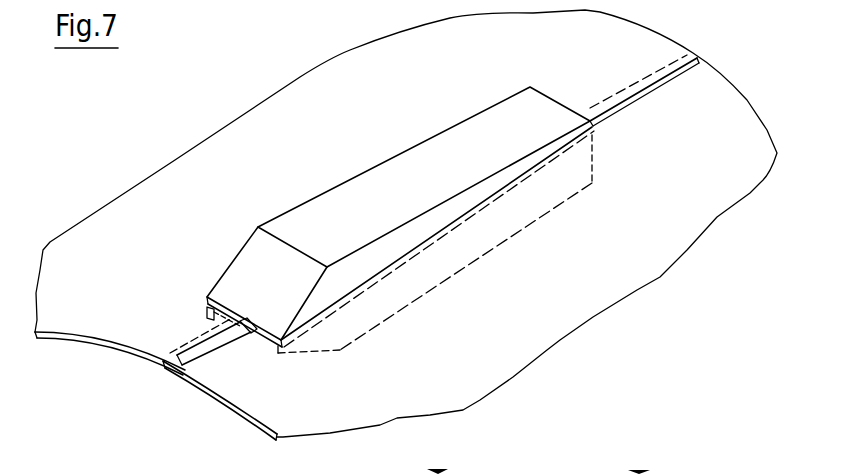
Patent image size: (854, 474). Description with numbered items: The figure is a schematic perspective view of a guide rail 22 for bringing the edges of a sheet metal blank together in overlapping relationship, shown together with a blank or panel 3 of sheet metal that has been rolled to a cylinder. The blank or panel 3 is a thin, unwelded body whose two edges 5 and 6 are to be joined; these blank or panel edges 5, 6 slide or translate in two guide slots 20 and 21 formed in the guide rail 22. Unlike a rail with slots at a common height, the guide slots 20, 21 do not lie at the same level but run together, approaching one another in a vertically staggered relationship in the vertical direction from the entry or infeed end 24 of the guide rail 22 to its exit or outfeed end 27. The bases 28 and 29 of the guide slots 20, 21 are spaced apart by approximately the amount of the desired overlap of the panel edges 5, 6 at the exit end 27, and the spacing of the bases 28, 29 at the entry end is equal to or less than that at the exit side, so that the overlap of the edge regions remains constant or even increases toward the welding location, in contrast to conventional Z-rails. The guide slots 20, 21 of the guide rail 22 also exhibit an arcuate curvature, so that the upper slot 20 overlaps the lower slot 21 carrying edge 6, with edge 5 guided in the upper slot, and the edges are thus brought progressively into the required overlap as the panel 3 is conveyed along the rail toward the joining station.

The blank or panel 3 is at (285, 83).
The blank or panel edge 5 is at (97, 347).
The blank or panel edge 6 is at (207, 390).
The guide slot 20 is at (206, 297).
The guide slot 21 is at (408, 252).
The guide rail 22 is at (341, 176).
The entry or infeed end 24 is at (560, 103).
The exit or outfeed end 27 is at (250, 280).
The base of guide slot 28 is at (205, 320).
The base of guide slot 29 is at (253, 336).